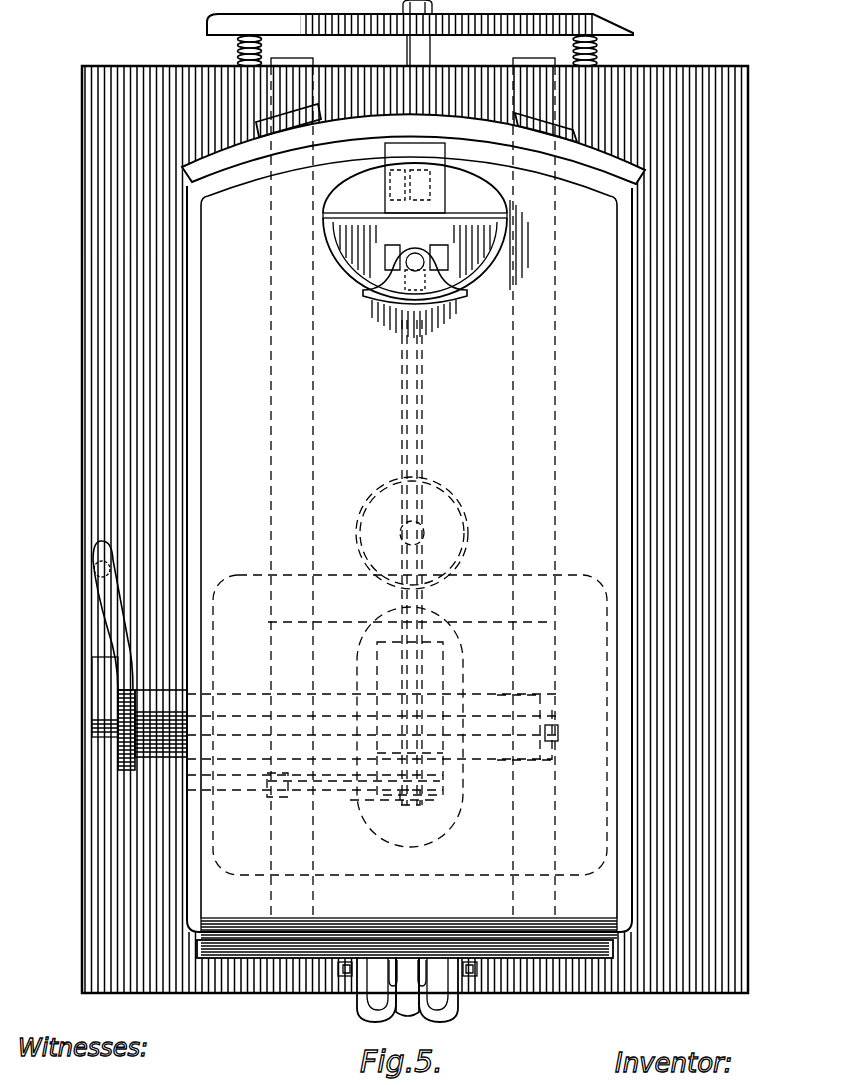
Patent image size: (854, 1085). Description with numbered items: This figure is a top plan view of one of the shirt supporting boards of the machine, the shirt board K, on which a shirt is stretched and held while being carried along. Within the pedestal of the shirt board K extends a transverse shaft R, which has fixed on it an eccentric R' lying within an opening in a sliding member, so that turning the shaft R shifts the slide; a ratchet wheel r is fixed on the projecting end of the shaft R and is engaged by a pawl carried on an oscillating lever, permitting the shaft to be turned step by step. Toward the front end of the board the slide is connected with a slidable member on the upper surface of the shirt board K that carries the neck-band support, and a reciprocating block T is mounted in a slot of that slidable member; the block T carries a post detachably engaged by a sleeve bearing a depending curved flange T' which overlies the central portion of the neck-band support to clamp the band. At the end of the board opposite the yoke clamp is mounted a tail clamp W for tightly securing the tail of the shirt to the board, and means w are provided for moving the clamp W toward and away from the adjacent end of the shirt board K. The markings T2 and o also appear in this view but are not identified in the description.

The shirt board K is at (603, 452).
The reciprocating block T is at (442, 111).
The arched bar T2 is at (577, 115).
The depending curved flange T' is at (425, 254).
The transverse shaft R is at (139, 649).
The eccentric R' is at (372, 711).
The ratchet wheel r is at (130, 772).
The tail clamp W is at (583, 962).
The clamp moving means w is at (407, 999).
The stop o is at (551, 733).